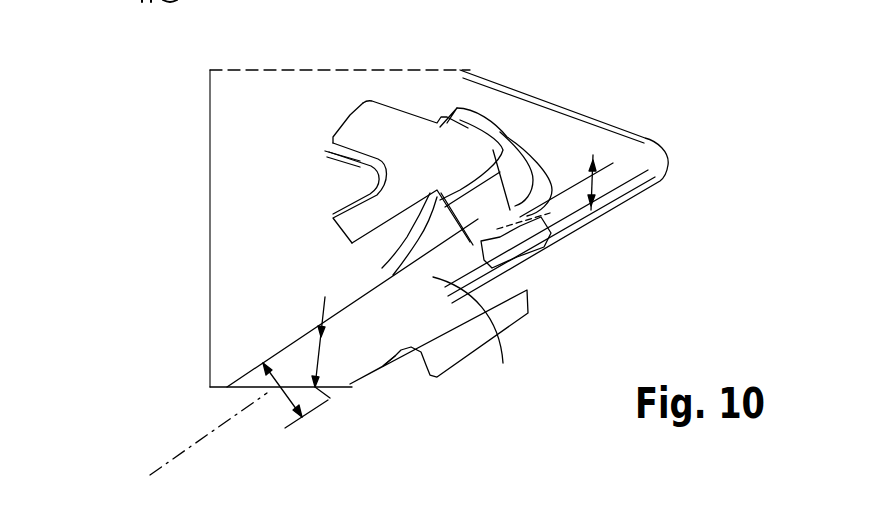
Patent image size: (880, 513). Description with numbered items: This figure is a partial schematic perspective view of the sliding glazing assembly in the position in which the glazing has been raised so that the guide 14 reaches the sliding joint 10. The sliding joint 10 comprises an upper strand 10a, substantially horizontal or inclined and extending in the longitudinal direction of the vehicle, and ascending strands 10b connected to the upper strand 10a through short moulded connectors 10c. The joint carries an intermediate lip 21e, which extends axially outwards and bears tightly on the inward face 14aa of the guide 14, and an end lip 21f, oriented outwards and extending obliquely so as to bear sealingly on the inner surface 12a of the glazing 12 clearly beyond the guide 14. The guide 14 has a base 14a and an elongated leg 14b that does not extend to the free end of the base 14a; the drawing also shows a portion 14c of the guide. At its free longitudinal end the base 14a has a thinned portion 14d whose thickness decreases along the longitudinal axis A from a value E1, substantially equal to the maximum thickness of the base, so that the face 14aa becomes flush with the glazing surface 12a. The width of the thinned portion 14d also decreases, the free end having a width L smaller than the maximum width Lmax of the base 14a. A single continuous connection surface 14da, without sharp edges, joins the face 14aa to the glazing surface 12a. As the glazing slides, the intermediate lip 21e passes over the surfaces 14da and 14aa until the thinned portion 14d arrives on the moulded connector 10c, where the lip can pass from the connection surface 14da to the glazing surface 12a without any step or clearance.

The sliding joint 10 is at (408, 102).
The upper strand 10a is at (367, 130).
The ascending strand 10b is at (358, 221).
The moulded connector 10c is at (512, 122).
The glazing 12 is at (613, 117).
The inner surface of the glazing 12a is at (553, 127).
The intermediate lip 21e is at (553, 170).
The thickness E1 is at (613, 163).
The length L is at (558, 232).
The guide 14 is at (533, 320).
The base of the guide 14a is at (328, 357).
The leg 14b is at (373, 353).
The side face of second clip 14c is at (447, 345).
The face oriented inwards of the guide 14aa is at (480, 335).
The thinned portion 14d is at (522, 262).
The connection surface 14da is at (525, 240).
The end lip 21f is at (323, 308).
The maximum width Lmax is at (288, 401).
The longitudinal axis A is at (172, 457).